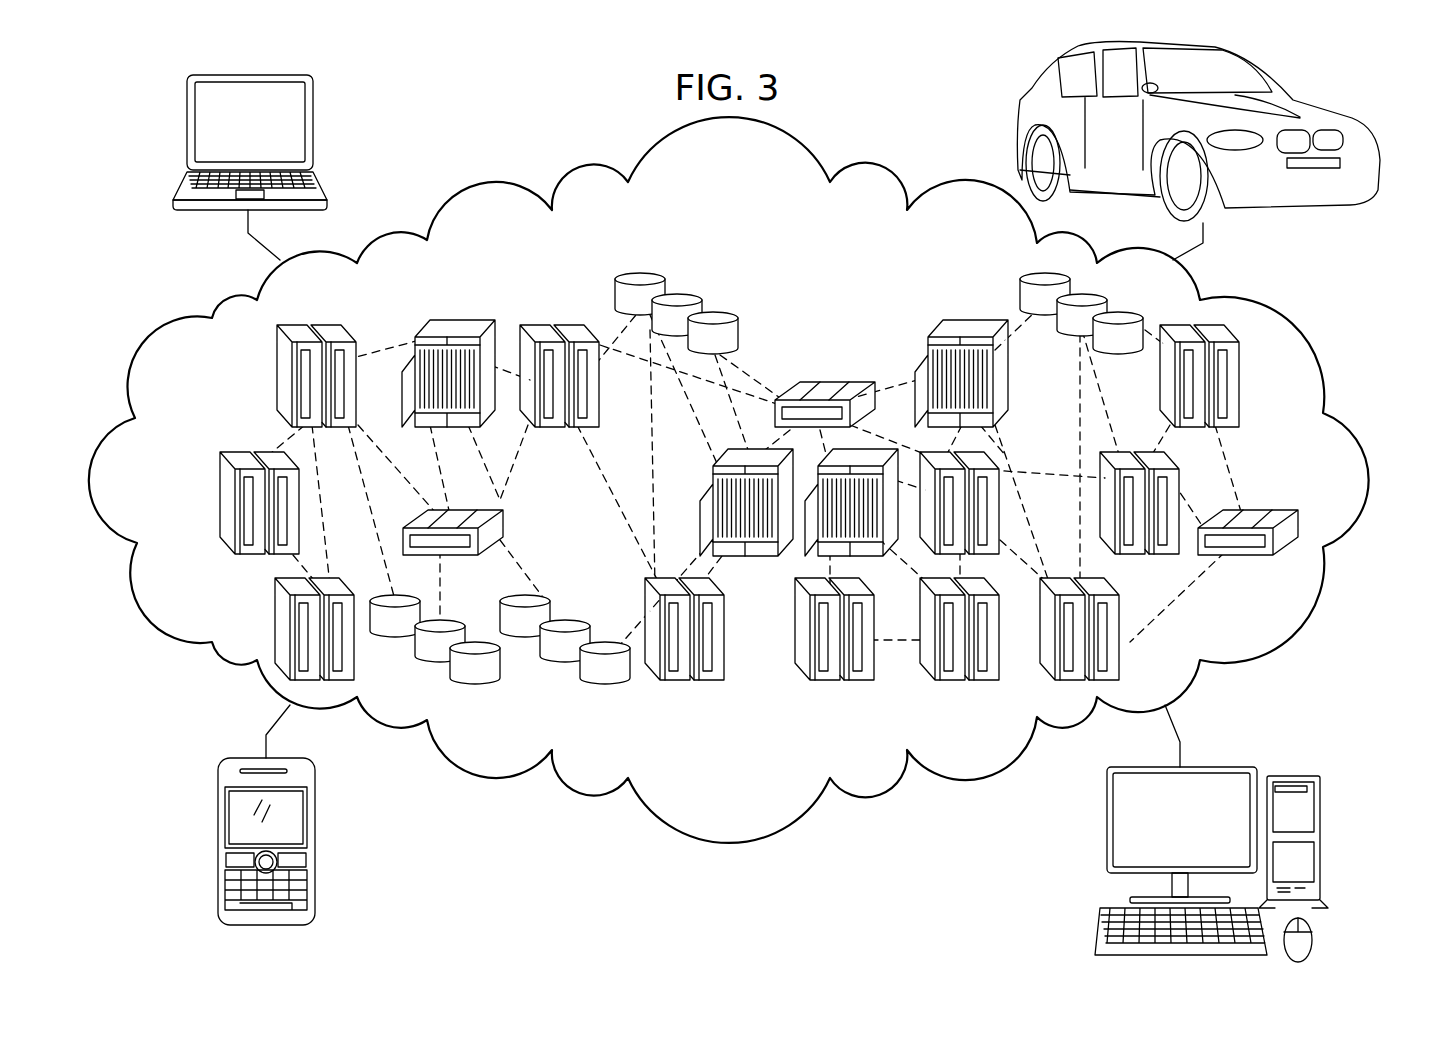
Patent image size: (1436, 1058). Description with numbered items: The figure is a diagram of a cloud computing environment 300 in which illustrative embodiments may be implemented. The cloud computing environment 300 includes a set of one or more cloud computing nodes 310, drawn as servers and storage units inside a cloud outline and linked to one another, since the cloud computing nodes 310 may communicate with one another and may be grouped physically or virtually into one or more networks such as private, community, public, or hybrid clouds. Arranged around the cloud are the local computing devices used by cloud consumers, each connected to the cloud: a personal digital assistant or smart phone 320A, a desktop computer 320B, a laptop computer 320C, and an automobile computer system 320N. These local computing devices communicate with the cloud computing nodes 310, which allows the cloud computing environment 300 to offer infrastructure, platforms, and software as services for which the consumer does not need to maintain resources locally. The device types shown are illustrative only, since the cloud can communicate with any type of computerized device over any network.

The cloud computing environment 300 is at (898, 807).
The cloud computing nodes 310 is at (675, 833).
The smart phone 320A is at (216, 827).
The desktop computer 320B is at (1289, 757).
The laptop computer 320C is at (315, 124).
The automobile computer system 320N is at (1343, 213).